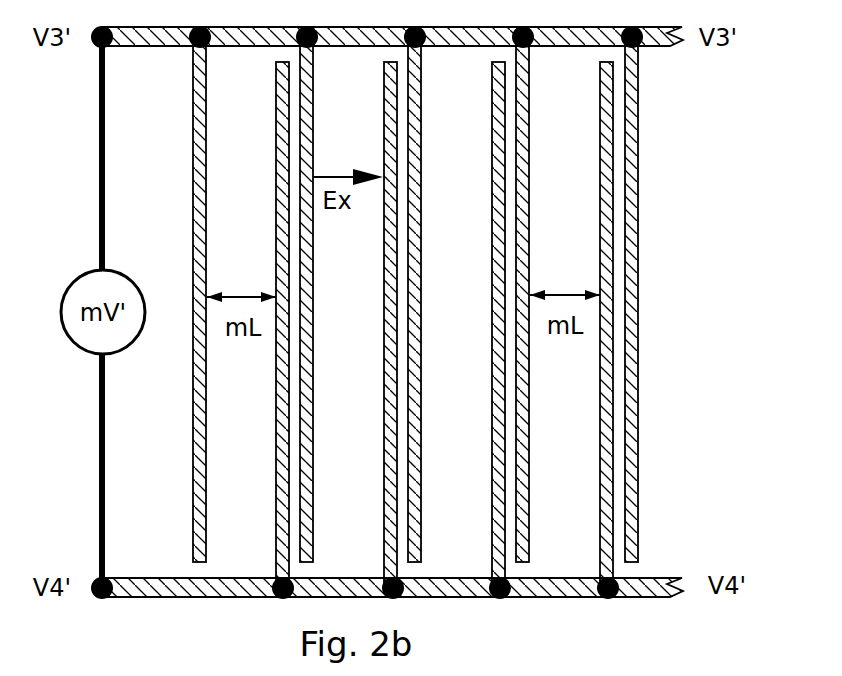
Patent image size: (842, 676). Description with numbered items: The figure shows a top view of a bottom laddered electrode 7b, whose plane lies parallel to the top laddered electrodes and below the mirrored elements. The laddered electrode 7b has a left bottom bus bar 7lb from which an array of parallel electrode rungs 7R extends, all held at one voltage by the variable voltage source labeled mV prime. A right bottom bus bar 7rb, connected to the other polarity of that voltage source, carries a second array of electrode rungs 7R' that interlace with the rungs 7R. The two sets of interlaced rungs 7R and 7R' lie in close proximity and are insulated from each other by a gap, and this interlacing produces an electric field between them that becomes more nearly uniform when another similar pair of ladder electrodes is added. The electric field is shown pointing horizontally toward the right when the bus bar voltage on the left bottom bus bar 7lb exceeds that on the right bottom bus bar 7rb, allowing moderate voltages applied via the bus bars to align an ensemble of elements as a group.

The laddered electrode 7b is at (745, 151).
The left bottom bus bar 7lb is at (387, 294).
The right bottom bus bar 7rb is at (387, 330).
The electrode rungs 7R is at (440, 299).
The interlaced electrode rungs 7R' is at (472, 325).